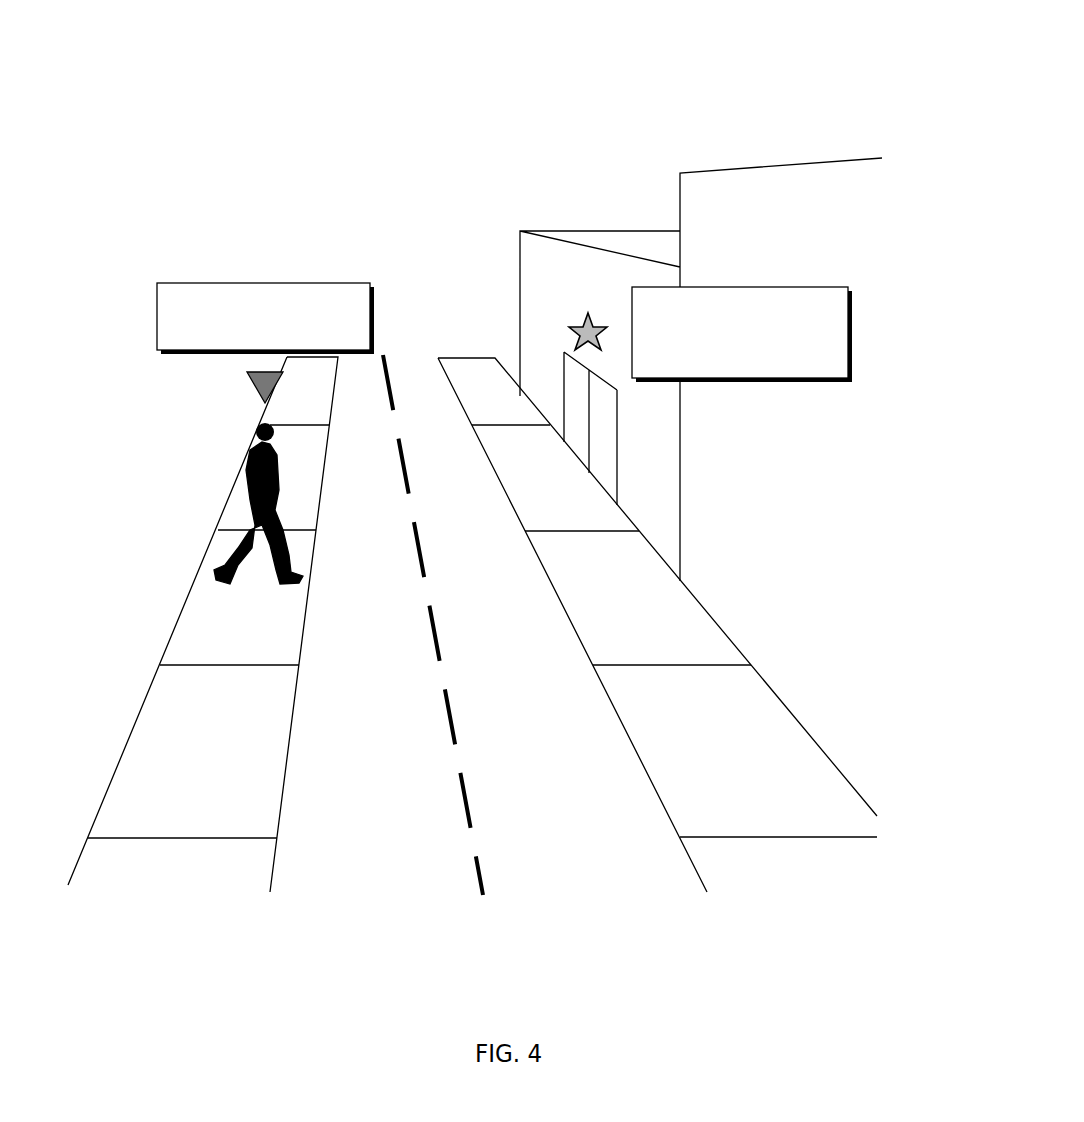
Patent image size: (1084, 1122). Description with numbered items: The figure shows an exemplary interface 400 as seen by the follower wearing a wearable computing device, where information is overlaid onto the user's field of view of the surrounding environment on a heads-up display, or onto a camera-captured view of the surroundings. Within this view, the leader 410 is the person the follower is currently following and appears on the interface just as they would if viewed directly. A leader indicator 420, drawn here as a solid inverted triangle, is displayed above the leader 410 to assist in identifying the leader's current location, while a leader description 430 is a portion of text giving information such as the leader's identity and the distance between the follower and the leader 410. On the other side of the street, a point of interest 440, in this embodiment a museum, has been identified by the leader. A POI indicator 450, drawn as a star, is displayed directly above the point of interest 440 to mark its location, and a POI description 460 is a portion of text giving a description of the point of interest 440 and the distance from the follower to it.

The interface 400 is at (630, 101).
The leader 410 is at (245, 470).
The leader indicator 420 is at (252, 380).
The leader description 430 is at (188, 283).
The point of interest 440 is at (519, 290).
The POI indicator 450 is at (582, 318).
The POI description 460 is at (790, 286).